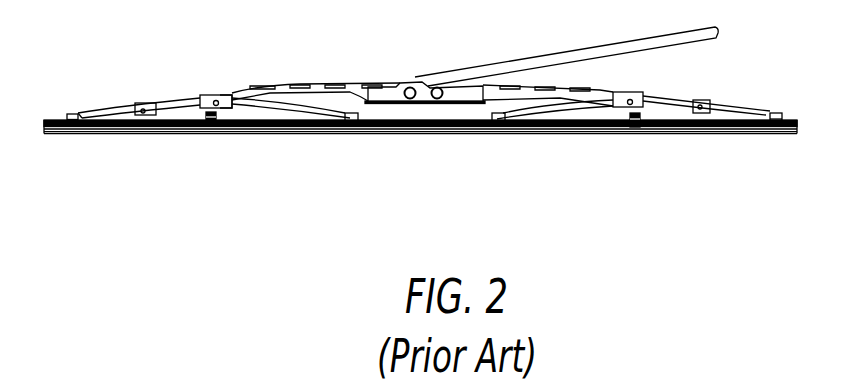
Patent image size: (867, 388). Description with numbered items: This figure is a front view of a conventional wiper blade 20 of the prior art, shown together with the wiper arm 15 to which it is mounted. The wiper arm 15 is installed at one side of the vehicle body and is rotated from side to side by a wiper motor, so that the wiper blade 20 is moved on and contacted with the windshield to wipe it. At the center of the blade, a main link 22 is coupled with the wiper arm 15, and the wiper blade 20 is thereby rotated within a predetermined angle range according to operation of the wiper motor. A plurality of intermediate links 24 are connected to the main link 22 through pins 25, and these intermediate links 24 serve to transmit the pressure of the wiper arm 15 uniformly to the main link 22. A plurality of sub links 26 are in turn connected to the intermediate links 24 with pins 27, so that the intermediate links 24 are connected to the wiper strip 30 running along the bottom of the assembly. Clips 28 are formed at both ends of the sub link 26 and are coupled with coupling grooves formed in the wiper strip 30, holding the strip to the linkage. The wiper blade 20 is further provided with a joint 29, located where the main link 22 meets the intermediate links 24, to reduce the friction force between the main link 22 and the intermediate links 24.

The wiper arm 15 is at (580, 52).
The wiper blade 20 is at (286, 66).
The main link 22 is at (366, 87).
The intermediate link 24 is at (172, 101).
The pin 25 is at (205, 95).
The sub link 26 is at (88, 108).
The pin 27 is at (144, 108).
The clip 28 is at (352, 136).
The joint 29 is at (226, 92).
The wiper strip 30 is at (144, 136).